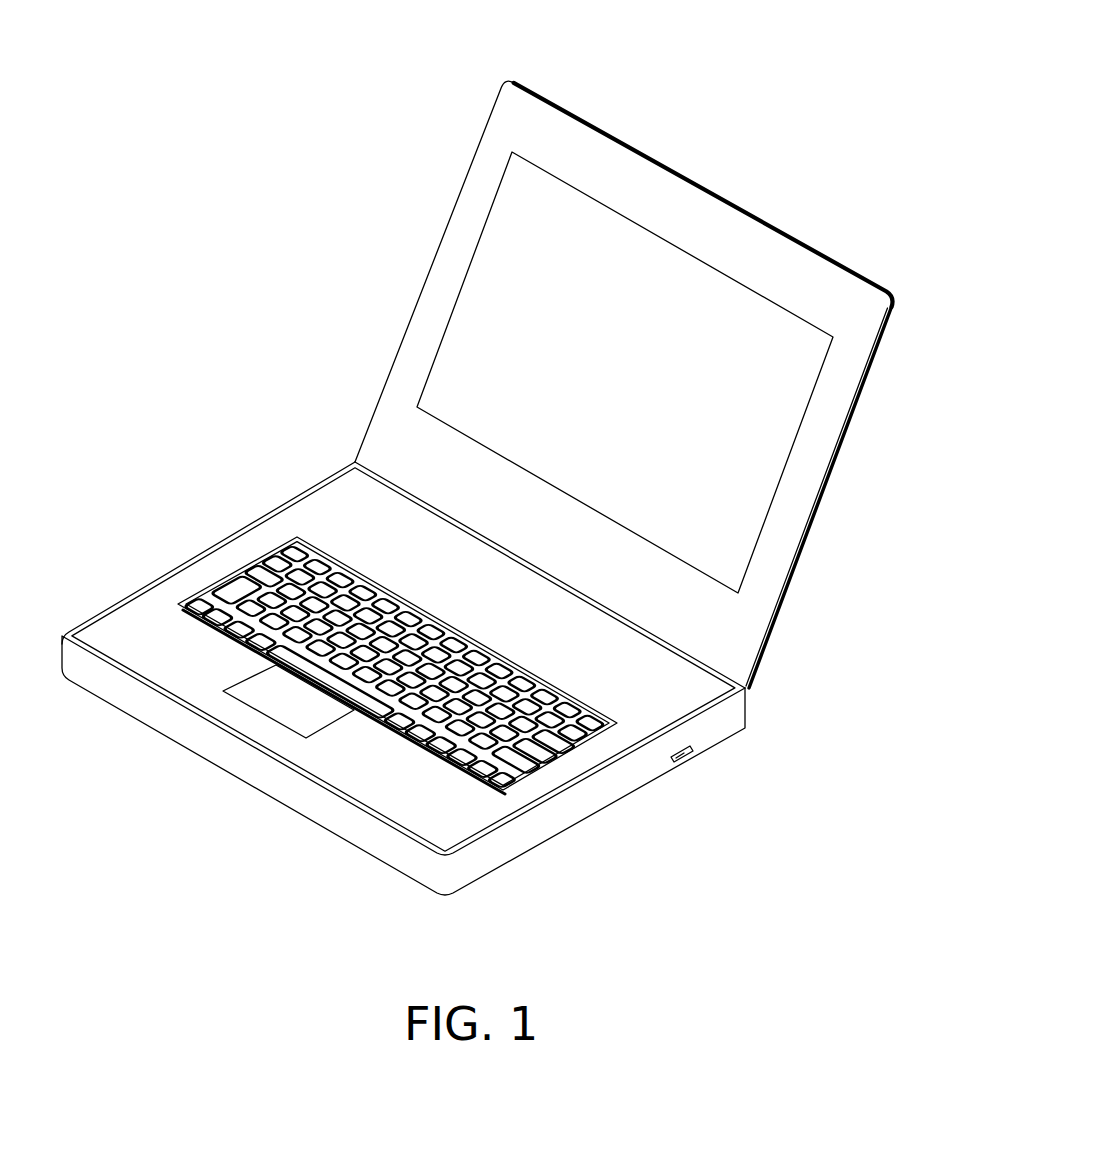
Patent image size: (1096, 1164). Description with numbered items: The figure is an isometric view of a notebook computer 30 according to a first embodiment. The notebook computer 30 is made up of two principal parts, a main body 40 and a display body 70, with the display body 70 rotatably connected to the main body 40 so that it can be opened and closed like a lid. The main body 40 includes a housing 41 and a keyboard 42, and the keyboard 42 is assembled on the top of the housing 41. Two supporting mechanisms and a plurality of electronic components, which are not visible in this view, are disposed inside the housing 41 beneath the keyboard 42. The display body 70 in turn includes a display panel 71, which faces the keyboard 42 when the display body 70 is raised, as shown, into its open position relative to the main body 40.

The notebook computer 30 is at (664, 105).
The main body 40 is at (124, 586).
The housing 41 is at (528, 833).
The keyboard 42 is at (232, 577).
The display body 70 is at (477, 180).
The display panel 71 is at (485, 327).